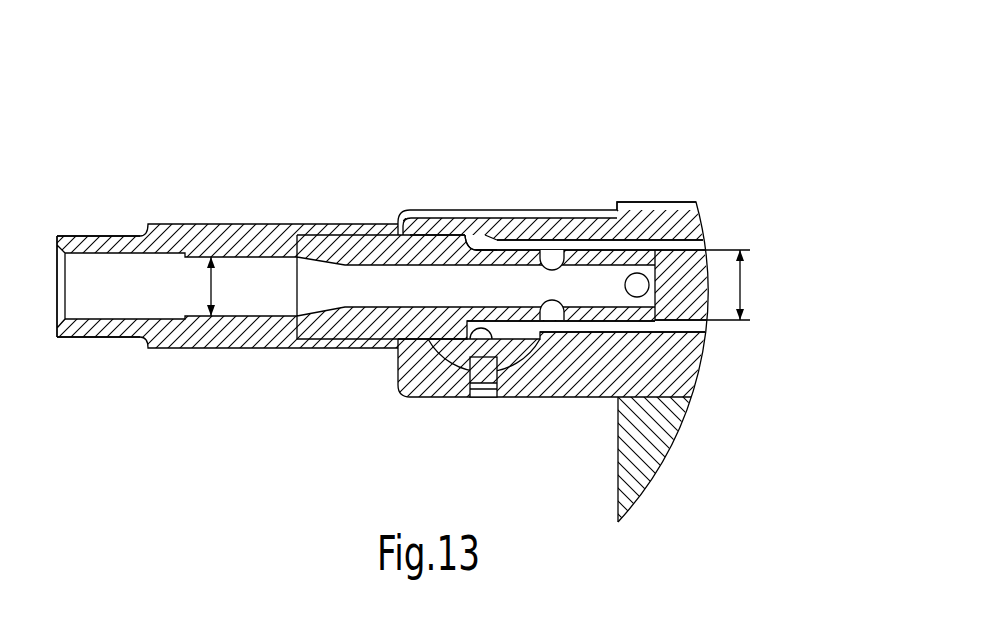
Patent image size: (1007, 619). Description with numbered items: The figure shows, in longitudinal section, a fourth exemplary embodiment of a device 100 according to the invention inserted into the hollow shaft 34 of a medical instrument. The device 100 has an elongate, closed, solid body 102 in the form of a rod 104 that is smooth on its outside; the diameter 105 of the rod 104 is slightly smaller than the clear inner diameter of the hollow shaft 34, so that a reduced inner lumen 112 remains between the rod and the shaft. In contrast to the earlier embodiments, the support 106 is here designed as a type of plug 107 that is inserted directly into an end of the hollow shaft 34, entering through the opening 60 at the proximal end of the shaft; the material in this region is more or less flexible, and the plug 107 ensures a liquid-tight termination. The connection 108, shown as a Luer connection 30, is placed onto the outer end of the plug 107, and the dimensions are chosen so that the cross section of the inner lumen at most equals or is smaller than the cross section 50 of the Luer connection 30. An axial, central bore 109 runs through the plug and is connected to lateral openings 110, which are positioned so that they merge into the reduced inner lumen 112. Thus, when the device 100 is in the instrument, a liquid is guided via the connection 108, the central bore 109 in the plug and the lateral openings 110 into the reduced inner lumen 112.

The Luer connection 30 is at (100, 237).
The connection 108 is at (240, 237).
The cross section 50 is at (210, 288).
The axial central bore 109 is at (368, 290).
The support 106 is at (430, 252).
The plug 107 is at (457, 237).
The device 100 is at (513, 228).
The openings 110 is at (553, 252).
The hollow shaft 34 is at (592, 232).
The rod 104 is at (690, 222).
The solid body 102 is at (680, 278).
The diameter 105 is at (742, 287).
The reduced inner lumen 112 is at (690, 326).
The opening 60 is at (397, 343).